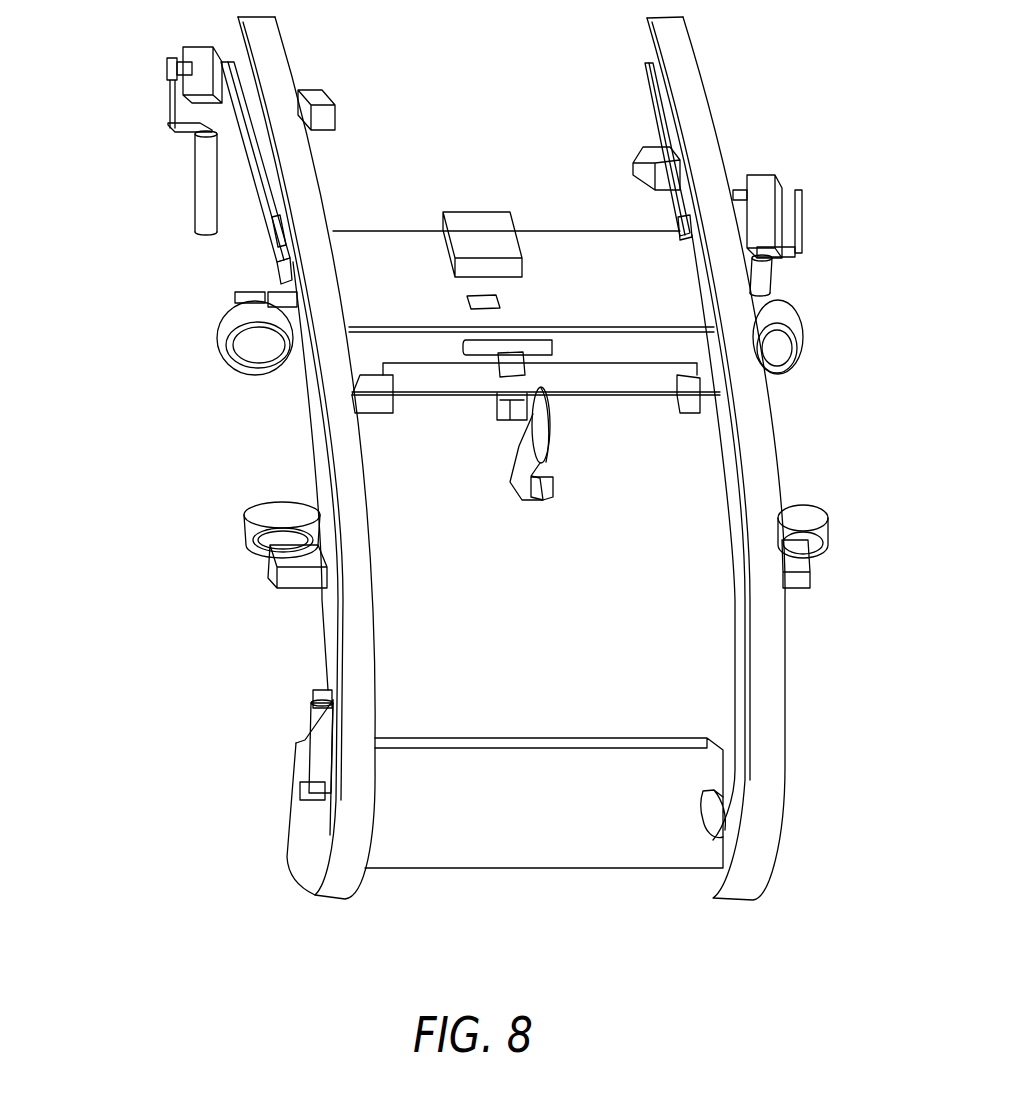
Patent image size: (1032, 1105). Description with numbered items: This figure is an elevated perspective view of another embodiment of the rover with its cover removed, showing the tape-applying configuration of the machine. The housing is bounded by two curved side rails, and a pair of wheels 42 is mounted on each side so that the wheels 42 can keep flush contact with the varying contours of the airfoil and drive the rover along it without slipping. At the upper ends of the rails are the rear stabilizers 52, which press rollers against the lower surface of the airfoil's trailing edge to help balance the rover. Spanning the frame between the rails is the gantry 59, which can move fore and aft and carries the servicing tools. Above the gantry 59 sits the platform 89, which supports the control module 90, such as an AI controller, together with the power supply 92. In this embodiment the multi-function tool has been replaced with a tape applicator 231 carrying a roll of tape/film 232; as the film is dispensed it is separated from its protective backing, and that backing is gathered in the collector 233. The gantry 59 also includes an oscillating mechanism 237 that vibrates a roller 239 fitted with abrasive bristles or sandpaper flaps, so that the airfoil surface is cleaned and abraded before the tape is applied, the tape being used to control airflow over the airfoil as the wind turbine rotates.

The wheels 42 is at (281, 503).
The rear stabilizer 52 is at (205, 203).
The gantry 59 is at (603, 380).
The platform 89 is at (645, 286).
The control module 90 is at (467, 300).
The power supply 92 is at (463, 222).
The tape applicator 231 is at (551, 458).
The roll of tape/film 232 is at (537, 420).
The collector 233 is at (548, 494).
The oscillating mechanism 237 is at (510, 368).
The roller 239 is at (553, 347).